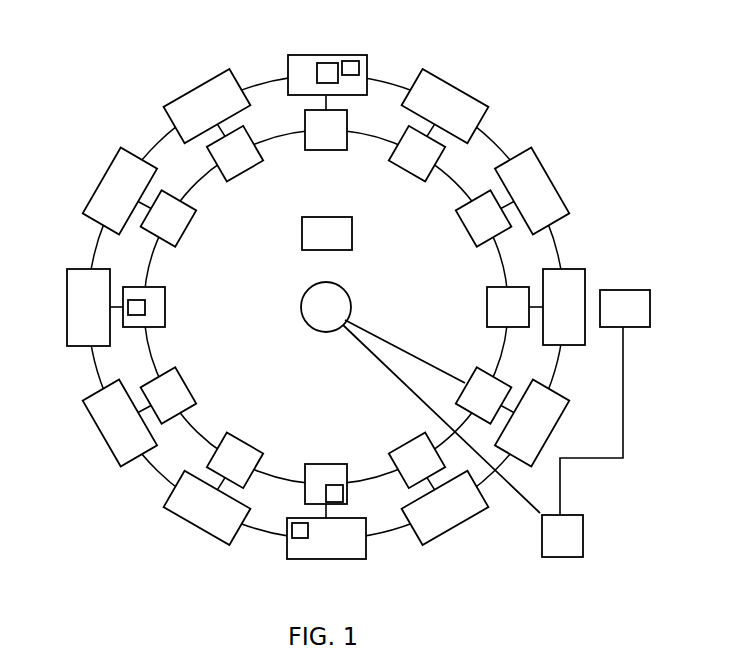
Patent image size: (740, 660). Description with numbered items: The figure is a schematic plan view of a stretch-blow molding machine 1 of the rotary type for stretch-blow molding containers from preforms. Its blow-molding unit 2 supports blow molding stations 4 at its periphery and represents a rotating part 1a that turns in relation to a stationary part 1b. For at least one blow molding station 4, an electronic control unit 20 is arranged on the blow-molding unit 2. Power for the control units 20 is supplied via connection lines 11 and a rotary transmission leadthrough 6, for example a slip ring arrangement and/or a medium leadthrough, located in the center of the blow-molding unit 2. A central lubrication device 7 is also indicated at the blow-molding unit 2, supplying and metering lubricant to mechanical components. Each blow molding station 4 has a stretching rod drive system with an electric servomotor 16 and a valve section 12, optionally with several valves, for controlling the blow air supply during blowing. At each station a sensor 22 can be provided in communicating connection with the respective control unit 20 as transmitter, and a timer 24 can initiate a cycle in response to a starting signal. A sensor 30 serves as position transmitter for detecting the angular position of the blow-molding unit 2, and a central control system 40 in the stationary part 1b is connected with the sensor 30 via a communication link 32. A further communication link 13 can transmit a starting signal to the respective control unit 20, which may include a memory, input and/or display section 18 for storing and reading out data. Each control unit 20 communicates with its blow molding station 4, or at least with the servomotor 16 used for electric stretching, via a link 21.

The stretch-blow molding machine 1 is at (127, 560).
The rotating part 1a is at (498, 140).
The stationary part 1b is at (70, 440).
The blow-molding unit 2 is at (560, 240).
The blow molding station 4 is at (96, 318).
The rotary transmission leadthrough 6 is at (343, 303).
The central unit 7 is at (321, 248).
The connection line 11 is at (425, 362).
The valve section 12 is at (350, 62).
The communication link 13 is at (514, 490).
The electric servomotor 16 is at (328, 68).
The memory and/or input and/or display section 18 is at (146, 304).
The electronic control unit 20 is at (226, 165).
The link 21 is at (302, 100).
The sensor 22 is at (304, 539).
The timer 24 is at (346, 494).
The sensor 30 is at (615, 319).
The communication link 32 is at (623, 380).
The central control system 40 is at (552, 546).